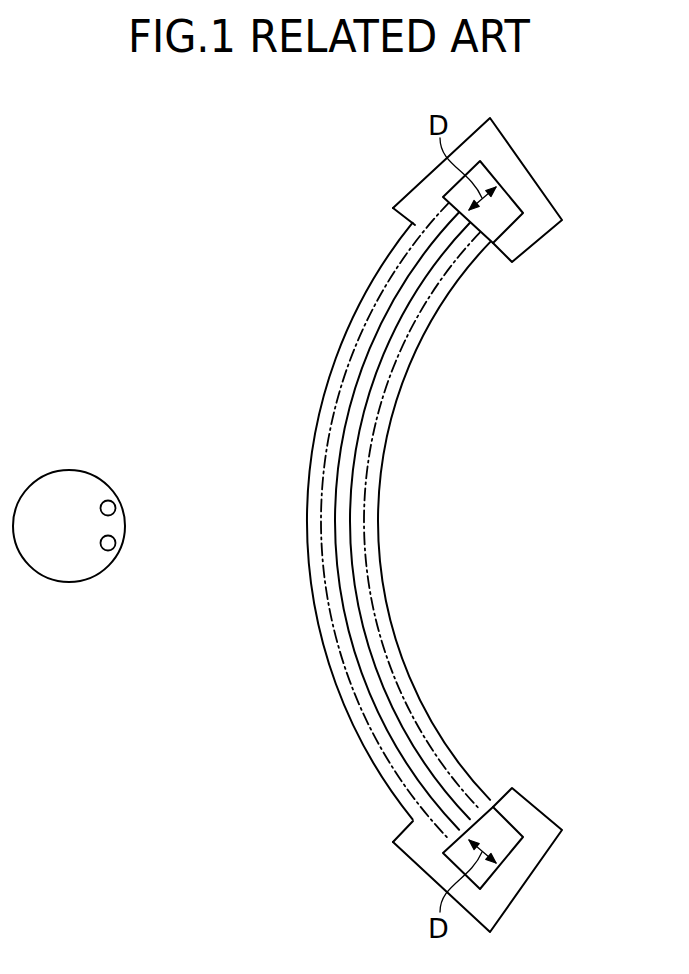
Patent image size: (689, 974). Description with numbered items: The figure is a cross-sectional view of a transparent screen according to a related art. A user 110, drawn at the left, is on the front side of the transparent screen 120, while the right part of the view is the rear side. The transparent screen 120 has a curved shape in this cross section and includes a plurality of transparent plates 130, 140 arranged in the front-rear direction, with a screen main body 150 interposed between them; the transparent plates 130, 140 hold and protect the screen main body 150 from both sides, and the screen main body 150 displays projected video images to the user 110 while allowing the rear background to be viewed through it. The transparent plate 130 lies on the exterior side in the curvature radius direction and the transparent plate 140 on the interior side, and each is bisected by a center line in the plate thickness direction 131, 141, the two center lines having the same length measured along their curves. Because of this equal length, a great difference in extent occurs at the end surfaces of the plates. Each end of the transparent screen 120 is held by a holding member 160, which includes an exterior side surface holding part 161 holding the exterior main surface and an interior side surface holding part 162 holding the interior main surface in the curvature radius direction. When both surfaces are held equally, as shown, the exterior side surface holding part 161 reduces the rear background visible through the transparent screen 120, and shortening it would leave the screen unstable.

The user 110 is at (67, 482).
The transparent screen 120 is at (370, 521).
The transparent plate 130 is at (354, 521).
The center line in the plate thickness direction 131 is at (326, 436).
The transparent plate 140 is at (420, 521).
The center line in the plate thickness direction 141 is at (378, 437).
The screen main body 150 is at (347, 525).
The holding member 160 is at (466, 525).
The exterior side surface holding part 161 is at (412, 202).
The interior side surface holding part 162 is at (528, 234).